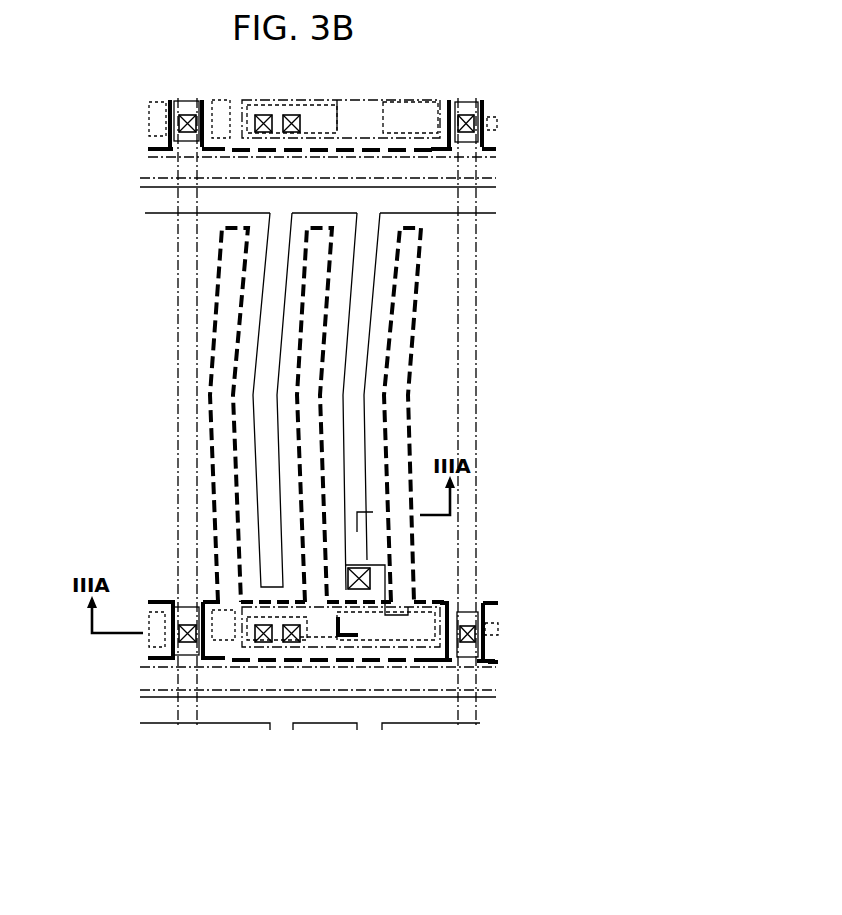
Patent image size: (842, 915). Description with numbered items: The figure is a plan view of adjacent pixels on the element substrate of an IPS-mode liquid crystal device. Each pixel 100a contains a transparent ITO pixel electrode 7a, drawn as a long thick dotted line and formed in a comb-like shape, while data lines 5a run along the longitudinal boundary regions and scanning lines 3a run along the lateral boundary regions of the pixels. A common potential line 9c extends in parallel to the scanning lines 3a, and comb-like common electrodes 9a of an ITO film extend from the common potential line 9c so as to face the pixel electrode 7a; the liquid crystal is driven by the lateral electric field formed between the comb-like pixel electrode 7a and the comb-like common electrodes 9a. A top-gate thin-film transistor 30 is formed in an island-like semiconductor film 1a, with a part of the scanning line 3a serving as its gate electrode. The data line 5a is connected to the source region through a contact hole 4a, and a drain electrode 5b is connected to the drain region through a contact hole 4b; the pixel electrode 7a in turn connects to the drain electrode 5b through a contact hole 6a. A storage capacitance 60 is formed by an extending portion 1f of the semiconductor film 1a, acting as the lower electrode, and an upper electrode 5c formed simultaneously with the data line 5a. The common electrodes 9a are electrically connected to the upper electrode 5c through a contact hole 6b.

The data line 5a is at (202, 96).
The scanning line 3a is at (505, 152).
The common potential line 9c is at (142, 185).
The pixel electrode 7a is at (212, 415).
The common electrode 9a is at (363, 425).
The pixel 100a is at (440, 338).
The contact hole 6b is at (372, 580).
The storage capacitance 60 is at (440, 608).
The contact hole 4a is at (192, 626).
The thin-film transistor 30 is at (240, 694).
The semiconductor film 1a is at (220, 640).
The contact hole 4b is at (263, 645).
The drain electrode 5b is at (288, 648).
The contact hole 6a is at (300, 640).
The extending portion 1f is at (380, 648).
The upper electrode 5c is at (413, 648).